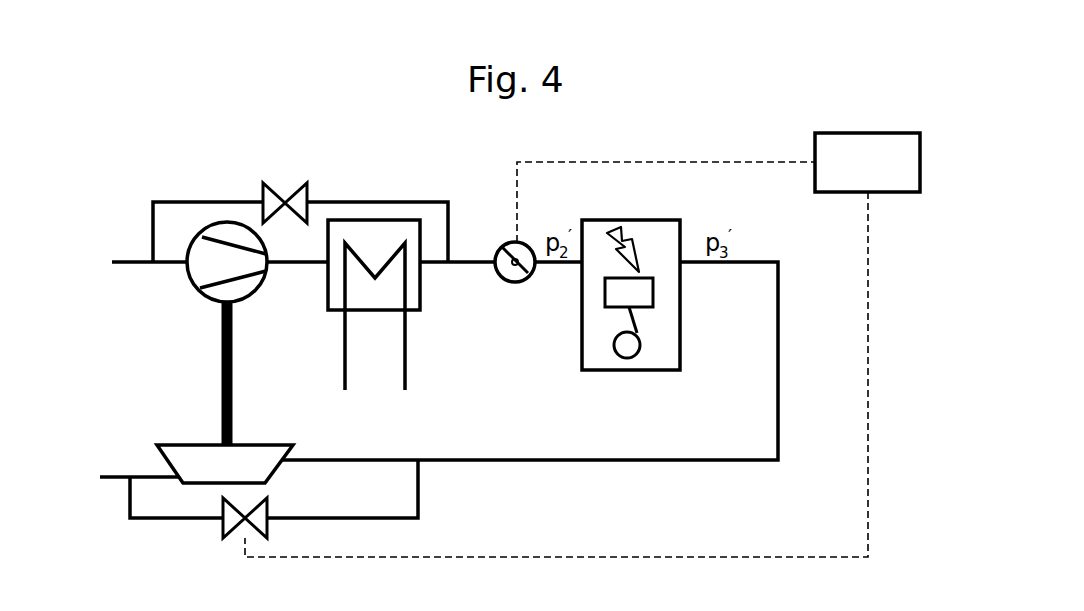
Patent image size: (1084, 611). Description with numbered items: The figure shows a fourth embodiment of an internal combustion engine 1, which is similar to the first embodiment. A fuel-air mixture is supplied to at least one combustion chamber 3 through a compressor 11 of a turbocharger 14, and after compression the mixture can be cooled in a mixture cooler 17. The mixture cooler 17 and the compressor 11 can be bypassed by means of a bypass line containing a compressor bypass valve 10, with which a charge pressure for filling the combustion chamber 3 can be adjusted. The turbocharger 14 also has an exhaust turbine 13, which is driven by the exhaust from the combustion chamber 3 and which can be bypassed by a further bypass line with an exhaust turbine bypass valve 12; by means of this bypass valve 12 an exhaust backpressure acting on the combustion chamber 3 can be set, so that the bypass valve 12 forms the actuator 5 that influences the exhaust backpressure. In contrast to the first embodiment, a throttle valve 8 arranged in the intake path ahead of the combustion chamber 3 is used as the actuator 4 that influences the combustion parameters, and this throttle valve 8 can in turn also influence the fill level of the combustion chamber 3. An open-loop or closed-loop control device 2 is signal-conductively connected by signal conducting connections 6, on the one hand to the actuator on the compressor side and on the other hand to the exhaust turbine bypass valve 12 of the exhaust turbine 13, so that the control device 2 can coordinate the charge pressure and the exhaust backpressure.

The internal combustion engine 1 is at (123, 117).
The open-loop or closed-loop control device 2 is at (867, 162).
The combustion chamber 3 is at (643, 236).
The actuator that influences combustion parameters 4 is at (497, 266).
The actuator that influences exhaust backpressure 5 is at (274, 528).
The signal conducting connection 6 is at (667, 160).
The throttle valve 8 is at (505, 242).
The compressor bypass valve 10 is at (263, 184).
The compressor 11 is at (202, 287).
The exhaust turbine bypass valve 12 is at (230, 536).
The exhaust turbine 13 is at (160, 443).
The turbocharger 14 is at (186, 380).
The mixture cooler 17 is at (328, 308).